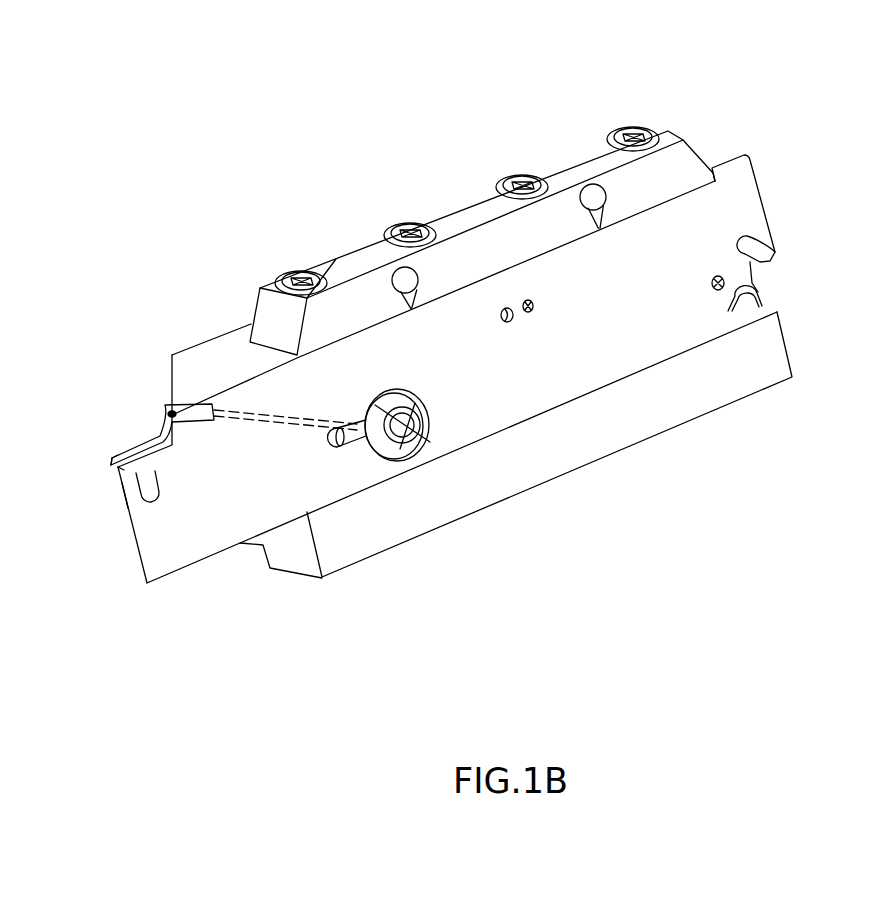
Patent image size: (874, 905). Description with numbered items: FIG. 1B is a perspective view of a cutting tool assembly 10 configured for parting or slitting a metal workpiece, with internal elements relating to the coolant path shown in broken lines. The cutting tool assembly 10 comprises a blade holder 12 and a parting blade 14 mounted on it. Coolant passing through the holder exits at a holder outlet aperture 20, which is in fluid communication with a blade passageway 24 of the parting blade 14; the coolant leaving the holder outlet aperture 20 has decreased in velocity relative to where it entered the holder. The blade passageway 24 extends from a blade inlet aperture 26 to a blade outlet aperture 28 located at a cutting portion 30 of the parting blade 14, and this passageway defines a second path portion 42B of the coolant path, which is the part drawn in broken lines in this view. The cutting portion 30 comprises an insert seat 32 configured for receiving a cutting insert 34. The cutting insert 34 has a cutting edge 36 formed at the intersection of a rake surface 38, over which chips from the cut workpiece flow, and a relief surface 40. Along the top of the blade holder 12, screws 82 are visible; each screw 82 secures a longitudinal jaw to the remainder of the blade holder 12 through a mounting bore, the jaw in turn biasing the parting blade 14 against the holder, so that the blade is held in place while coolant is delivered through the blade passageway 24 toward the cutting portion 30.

The cutting tool assembly 10 is at (774, 91).
The blade holder 12 is at (673, 132).
The parting blade 14 is at (761, 150).
The holder outlet aperture 20 is at (345, 452).
The blade passageway 24 is at (258, 434).
The blade inlet aperture 26 is at (360, 418).
The blade outlet aperture 28 is at (178, 430).
The cutting portion 30 is at (124, 419).
The insert seat 32 is at (122, 495).
The cutting insert 34 is at (158, 478).
The cutting edge 36 is at (112, 463).
The rake surface 38 is at (117, 459).
The relief surface 40 is at (120, 471).
The second path portion 42B is at (139, 445).
The screw 82 is at (300, 282).